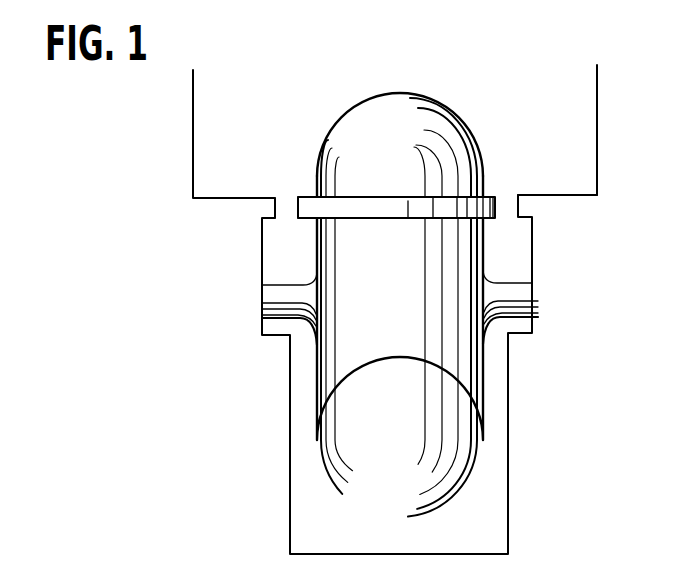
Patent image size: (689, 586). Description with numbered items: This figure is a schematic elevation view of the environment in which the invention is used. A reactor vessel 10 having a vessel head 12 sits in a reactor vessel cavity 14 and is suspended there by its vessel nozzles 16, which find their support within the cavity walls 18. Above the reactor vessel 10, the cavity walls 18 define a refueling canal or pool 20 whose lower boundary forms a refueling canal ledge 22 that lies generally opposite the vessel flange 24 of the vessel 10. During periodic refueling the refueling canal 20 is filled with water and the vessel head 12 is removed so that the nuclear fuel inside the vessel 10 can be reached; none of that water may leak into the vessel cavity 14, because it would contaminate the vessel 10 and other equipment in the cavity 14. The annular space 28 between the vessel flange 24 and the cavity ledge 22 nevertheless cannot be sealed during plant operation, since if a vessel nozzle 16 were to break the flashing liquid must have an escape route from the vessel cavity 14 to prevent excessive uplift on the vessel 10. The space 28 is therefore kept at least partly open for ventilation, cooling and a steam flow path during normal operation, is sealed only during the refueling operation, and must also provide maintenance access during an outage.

The reactor vessel 10 is at (318, 405).
The vessel head 12 is at (432, 103).
The reactor vessel cavity 14 is at (300, 263).
The vessel nozzle 16 is at (522, 276).
The cavity wall 18 is at (534, 230).
The refueling canal 20 is at (272, 100).
The refueling canal ledge 22 is at (535, 195).
The vessel flange 24 is at (490, 196).
The annular space 28 is at (290, 207).